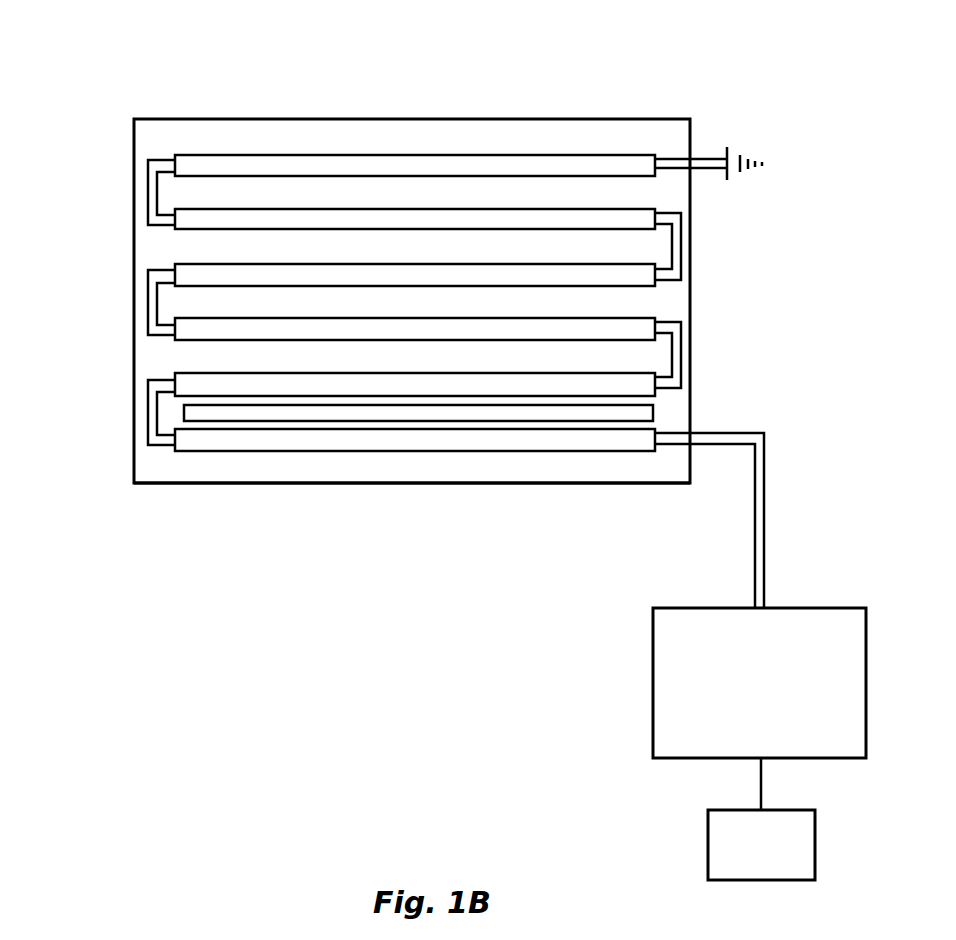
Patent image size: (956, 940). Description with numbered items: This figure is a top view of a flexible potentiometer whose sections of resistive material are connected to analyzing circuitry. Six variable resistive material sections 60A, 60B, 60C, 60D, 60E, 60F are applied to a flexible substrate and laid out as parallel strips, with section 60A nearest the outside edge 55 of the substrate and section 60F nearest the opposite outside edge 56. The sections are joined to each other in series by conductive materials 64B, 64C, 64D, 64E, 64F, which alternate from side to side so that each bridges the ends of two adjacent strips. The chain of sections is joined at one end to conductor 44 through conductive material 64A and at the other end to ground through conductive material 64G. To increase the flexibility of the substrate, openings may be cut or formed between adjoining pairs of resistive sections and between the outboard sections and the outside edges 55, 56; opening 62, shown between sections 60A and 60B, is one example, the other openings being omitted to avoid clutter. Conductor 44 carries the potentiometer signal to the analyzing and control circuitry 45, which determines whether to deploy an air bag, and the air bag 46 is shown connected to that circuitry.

The outside edge 56 is at (453, 119).
The outside edge 55 is at (322, 485).
The variable resistive material section 60A is at (540, 438).
The variable resistive material section 60B is at (530, 382).
The variable resistive material section 60C is at (530, 328).
The variable resistive material section 60D is at (530, 273).
The variable resistive material section 60E is at (530, 218).
The variable resistive material section 60F is at (530, 164).
The opening 62 is at (223, 415).
The conductive material 64A is at (660, 433).
The conductive material 64B is at (163, 447).
The conductive material 64C is at (683, 355).
The conductive material 64D is at (150, 305).
The conductive material 64E is at (683, 247).
The conductive material 64F is at (153, 203).
The conductive material 64G is at (711, 157).
The conductor 44 is at (712, 437).
The analyzing and control circuitry 45 is at (652, 720).
The air bag 46 is at (708, 843).